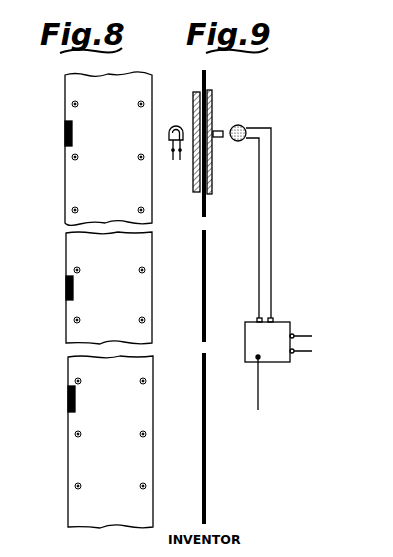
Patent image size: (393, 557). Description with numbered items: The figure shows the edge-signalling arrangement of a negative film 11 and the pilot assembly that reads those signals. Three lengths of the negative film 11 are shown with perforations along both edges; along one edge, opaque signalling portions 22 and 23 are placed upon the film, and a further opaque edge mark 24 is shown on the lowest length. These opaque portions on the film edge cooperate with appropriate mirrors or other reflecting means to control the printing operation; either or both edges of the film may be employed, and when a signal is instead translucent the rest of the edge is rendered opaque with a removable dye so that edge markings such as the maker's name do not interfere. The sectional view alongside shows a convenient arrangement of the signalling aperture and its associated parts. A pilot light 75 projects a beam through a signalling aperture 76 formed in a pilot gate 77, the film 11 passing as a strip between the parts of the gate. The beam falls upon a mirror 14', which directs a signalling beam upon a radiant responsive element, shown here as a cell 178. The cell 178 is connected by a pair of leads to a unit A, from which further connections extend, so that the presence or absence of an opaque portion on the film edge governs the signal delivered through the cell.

In FIG. 8, the negative film 11 is at (146, 84).
In FIG. 9, the negative film 11 is at (206, 281).
In FIG. 8, the opaque signalling portion 22 is at (64, 126).
In FIG. 8, the opaque signalling portion 23 is at (66, 283).
In FIG. 8, the contact strip 24 is at (37, 385).
In FIG. 9, the pilot light 75 is at (178, 126).
In FIG. 9, the signalling aperture 76 is at (215, 130).
In FIG. 9, the pilot gate 77 is at (212, 101).
In FIG. 9, the mirror 14' is at (228, 160).
In FIG. 9, the cell 178 is at (245, 127).
In FIG. 9, the control unit A is at (277, 327).